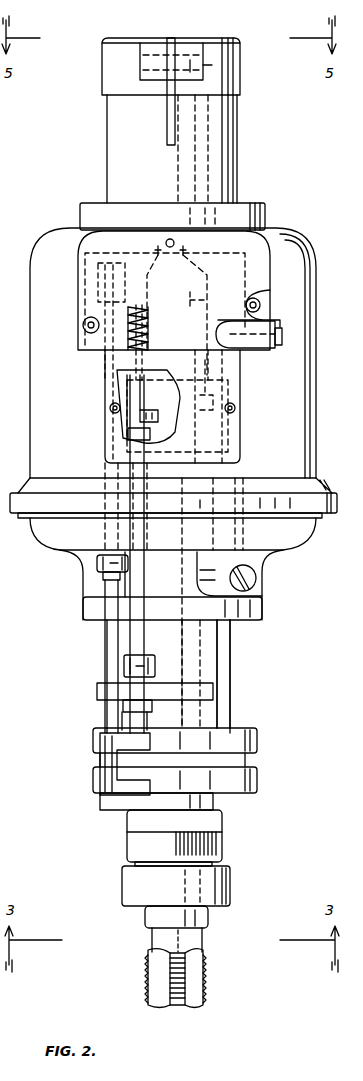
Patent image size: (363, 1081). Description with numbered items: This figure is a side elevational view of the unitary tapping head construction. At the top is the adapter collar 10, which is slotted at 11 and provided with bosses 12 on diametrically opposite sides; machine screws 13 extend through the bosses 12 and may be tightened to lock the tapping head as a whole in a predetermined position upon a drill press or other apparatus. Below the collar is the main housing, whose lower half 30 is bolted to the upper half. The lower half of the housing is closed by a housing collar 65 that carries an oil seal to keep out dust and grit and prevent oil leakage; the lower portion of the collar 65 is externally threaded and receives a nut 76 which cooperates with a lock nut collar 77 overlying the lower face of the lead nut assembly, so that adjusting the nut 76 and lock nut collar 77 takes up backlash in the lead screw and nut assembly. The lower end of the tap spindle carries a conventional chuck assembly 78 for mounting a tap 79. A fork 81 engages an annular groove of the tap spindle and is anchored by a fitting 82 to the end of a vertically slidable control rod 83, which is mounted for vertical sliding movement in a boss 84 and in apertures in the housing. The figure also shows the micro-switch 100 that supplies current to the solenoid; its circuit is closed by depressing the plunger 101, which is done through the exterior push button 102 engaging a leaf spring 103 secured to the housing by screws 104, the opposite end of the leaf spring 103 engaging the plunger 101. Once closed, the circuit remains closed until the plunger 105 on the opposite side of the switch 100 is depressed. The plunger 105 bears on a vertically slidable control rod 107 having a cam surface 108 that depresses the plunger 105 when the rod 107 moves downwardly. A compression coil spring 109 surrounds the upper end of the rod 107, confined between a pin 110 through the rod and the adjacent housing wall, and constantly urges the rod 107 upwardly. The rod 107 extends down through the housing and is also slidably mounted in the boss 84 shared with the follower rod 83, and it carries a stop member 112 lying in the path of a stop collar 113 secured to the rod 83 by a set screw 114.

The adapter collar 10 is at (222, 170).
The slot 11 is at (172, 125).
The bosses 12 is at (140, 50).
The machine screws 13 is at (212, 65).
The lower half of the main housing 30 is at (265, 592).
The housing collar 65 is at (232, 662).
The nut 76 is at (258, 740).
The lock nut collar 77 is at (258, 778).
The chuck assembly 78 is at (230, 888).
The tap 79 is at (206, 980).
The fork 81 is at (220, 801).
The fitting 82 is at (100, 795).
The control rod 83 is at (105, 668).
The boss 84 is at (180, 698).
The micro-switch 100 is at (195, 430).
The plunger 101 is at (213, 400).
The exterior push button 102 is at (282, 334).
The leaf spring 103 is at (177, 300).
The screws 104 is at (176, 315).
The plunger 105 is at (140, 433).
The control rod 107 is at (130, 392).
The cam surface 108 is at (138, 416).
The compression coil spring 109 is at (148, 338).
The pin 110 is at (148, 316).
The stop member 112 is at (152, 666).
The stop collar 113 is at (97, 563).
The set screw 114 is at (110, 578).